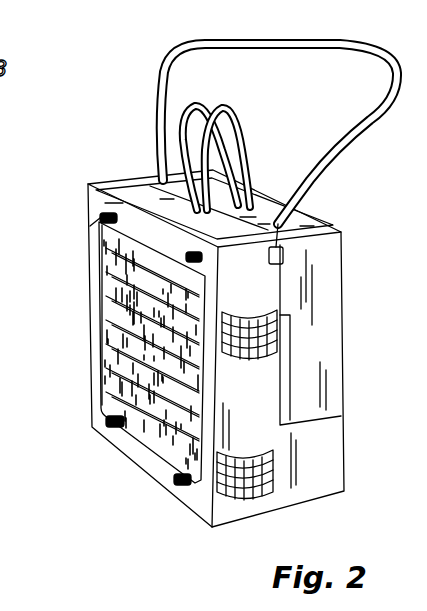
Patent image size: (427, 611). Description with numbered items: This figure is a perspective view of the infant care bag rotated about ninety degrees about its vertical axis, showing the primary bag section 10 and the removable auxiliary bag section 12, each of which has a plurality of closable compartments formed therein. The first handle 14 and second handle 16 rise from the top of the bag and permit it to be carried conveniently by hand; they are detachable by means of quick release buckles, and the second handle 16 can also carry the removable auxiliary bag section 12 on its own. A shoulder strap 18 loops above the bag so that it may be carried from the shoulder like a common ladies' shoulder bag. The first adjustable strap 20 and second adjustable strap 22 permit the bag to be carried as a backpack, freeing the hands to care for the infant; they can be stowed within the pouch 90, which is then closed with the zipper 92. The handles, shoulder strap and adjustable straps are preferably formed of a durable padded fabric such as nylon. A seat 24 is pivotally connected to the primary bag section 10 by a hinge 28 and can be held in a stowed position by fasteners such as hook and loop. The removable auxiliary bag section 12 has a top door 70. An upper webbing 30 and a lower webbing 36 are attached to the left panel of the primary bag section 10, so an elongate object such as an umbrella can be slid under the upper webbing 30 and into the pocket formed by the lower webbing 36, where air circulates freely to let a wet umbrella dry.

The primary bag section 10 is at (320, 478).
The removable auxiliary bag section 12 is at (350, 279).
The first handle 14 is at (200, 107).
The second handle 16 is at (258, 122).
The shoulder strap 18 is at (367, 121).
The first adjustable strap 20 is at (100, 216).
The second adjustable strap 22 is at (199, 257).
The seat 24 is at (285, 394).
The hinge 28 is at (143, 197).
The upper webbing 30 is at (247, 352).
The lower webbing 36 is at (255, 490).
The top door 70 is at (303, 223).
The pouch 90 is at (117, 367).
The zipper 92 is at (93, 277).